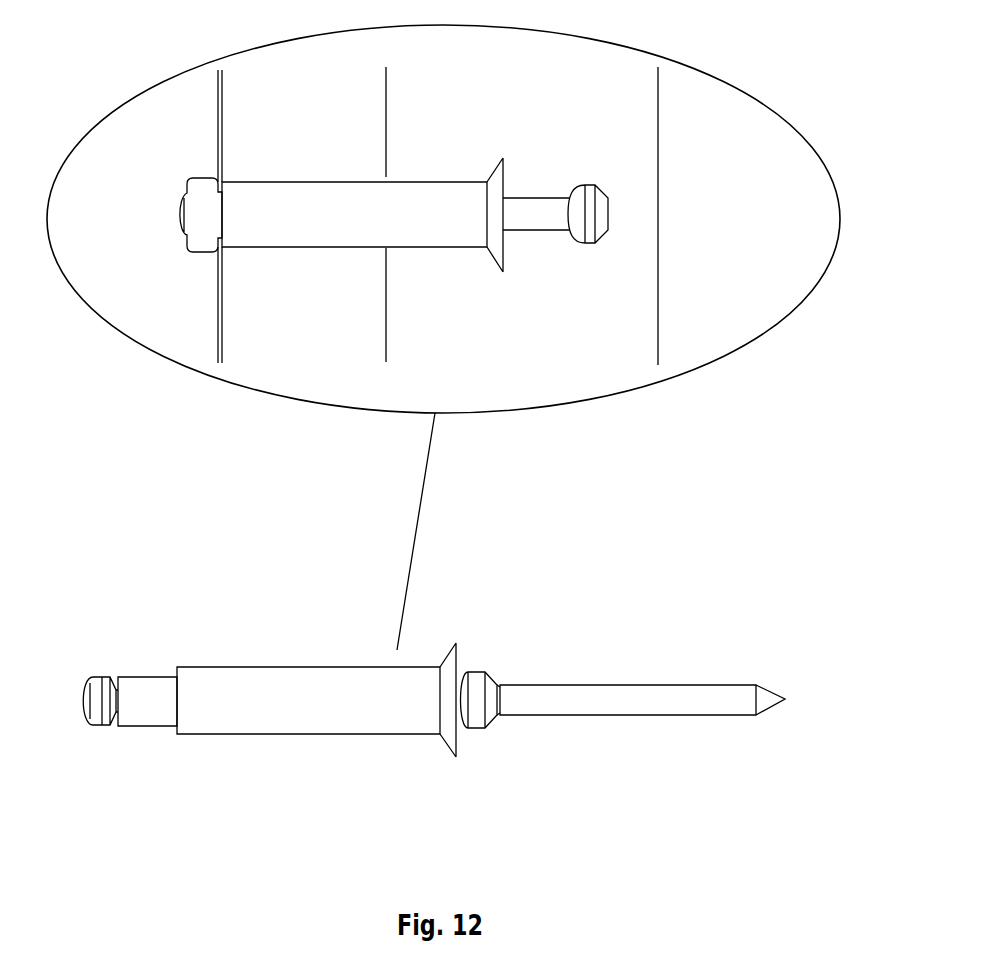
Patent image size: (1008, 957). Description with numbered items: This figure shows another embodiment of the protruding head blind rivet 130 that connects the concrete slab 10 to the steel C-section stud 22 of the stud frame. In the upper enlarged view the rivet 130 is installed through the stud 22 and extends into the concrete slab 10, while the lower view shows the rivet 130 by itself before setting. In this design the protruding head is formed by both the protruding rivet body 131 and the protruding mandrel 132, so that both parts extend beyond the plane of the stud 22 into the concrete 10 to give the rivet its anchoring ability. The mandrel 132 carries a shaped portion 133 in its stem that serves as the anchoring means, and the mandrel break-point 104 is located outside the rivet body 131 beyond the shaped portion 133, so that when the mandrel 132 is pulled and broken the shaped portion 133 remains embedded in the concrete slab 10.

The concrete slab 10 is at (563, 302).
The C-section stud 22 is at (222, 322).
The protruding head blind rivet 130 is at (470, 255).
The protruding rivet body 131 is at (268, 685).
The protruding mandrel 132 is at (600, 702).
The shaped portion 133 is at (483, 670).
The mandrel break-point 104 is at (498, 717).